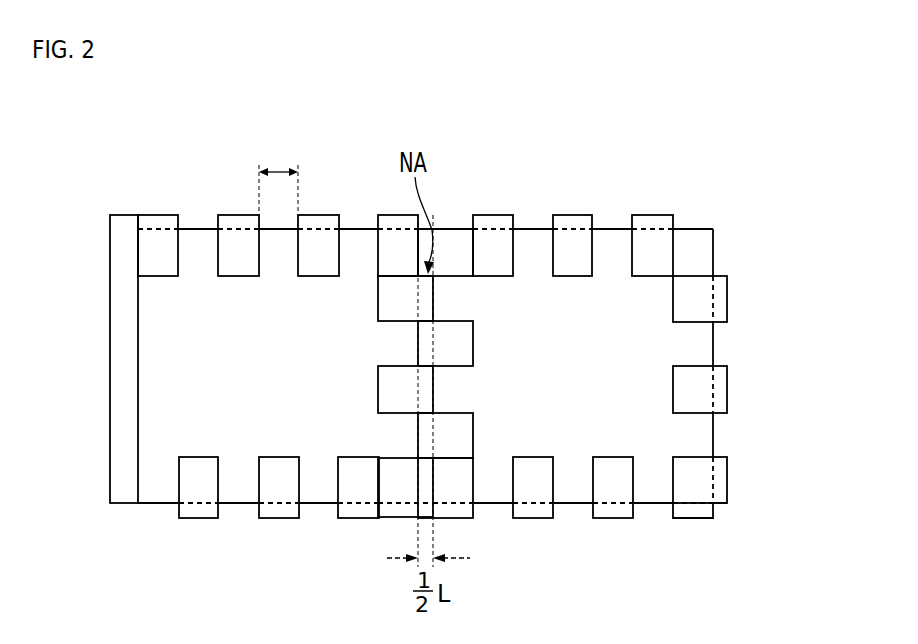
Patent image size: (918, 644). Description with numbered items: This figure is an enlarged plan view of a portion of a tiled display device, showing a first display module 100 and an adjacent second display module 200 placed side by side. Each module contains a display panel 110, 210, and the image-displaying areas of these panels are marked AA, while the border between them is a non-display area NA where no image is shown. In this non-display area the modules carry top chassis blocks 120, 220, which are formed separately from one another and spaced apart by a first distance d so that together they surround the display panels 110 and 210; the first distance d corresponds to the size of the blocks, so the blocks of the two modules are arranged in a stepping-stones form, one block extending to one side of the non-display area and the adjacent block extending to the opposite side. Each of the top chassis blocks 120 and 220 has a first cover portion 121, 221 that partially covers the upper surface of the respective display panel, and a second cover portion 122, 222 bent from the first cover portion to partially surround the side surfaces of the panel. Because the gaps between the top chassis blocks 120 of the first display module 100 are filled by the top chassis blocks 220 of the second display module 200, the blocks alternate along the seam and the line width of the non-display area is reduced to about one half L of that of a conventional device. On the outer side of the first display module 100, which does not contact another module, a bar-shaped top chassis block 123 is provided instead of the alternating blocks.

The first display module 100 is at (230, 186).
The display panel 110 is at (160, 352).
The top chassis blocks 120 is at (152, 140).
The first cover portion 121 is at (155, 250).
The second cover portion 122 is at (163, 223).
The top chassis block 123 is at (123, 445).
The second display module 200 is at (513, 182).
The display panel 210 is at (668, 342).
The top chassis blocks 220 is at (745, 153).
The first cover portion 221 is at (696, 282).
The second cover portion 222 is at (652, 224).